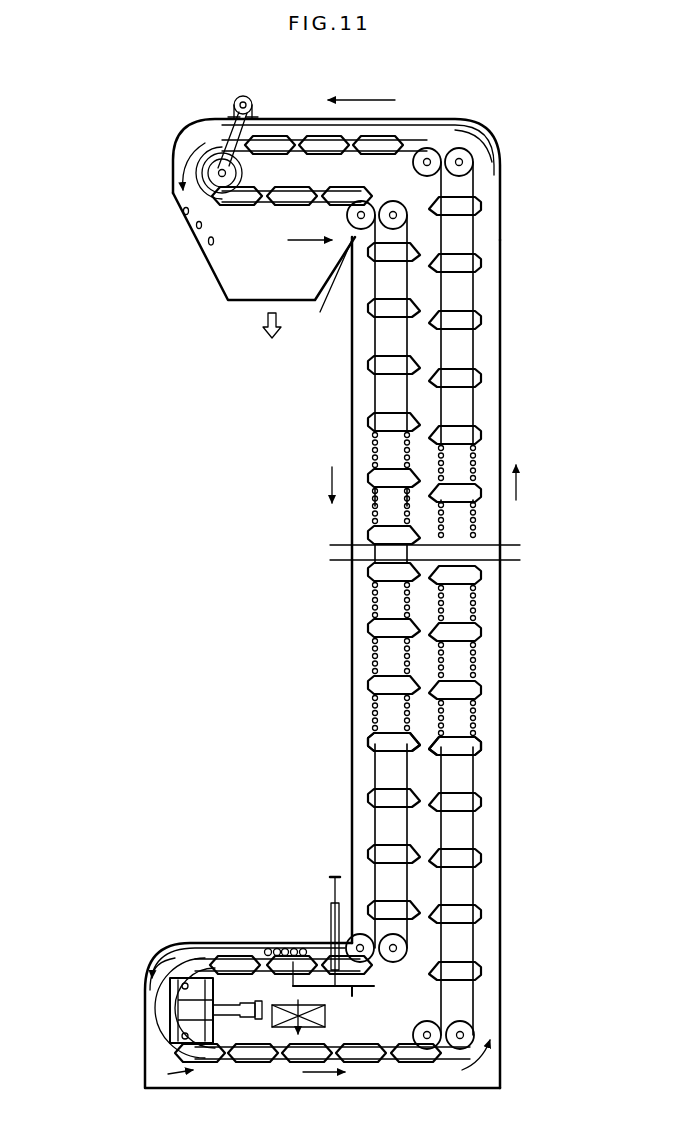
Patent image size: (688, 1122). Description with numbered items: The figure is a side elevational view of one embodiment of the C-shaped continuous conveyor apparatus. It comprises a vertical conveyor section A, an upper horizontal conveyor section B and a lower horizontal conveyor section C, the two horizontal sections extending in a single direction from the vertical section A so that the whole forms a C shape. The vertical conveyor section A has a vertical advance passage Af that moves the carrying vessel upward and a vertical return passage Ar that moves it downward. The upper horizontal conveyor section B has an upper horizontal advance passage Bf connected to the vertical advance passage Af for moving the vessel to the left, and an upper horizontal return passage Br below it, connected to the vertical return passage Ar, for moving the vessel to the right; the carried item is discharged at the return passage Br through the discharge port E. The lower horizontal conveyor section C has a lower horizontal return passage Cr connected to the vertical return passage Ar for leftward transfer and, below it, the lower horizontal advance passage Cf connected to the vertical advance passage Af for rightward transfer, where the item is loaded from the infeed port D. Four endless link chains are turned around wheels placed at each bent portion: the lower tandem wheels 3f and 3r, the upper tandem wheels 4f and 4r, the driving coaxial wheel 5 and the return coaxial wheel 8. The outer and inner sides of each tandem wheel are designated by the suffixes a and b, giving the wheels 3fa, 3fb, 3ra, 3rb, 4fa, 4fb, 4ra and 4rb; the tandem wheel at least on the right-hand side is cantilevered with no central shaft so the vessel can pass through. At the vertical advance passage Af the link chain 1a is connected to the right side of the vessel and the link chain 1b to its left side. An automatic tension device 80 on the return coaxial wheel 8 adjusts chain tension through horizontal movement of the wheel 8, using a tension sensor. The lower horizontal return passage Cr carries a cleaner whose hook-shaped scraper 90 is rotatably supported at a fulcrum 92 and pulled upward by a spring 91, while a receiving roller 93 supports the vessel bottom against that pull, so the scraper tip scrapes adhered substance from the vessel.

The upper horizontal conveyor section B is at (377, 113).
The upper horizontal advance passage Bf is at (288, 135).
The upper horizontal return passage Br is at (268, 216).
The driving coaxial wheel 5 is at (207, 160).
The discharge port E is at (250, 300).
The upper rear tandem wheel 4r is at (330, 288).
The upper front tandem wheel 4f is at (477, 147).
The outer side of upper front tandem wheel 4fa is at (475, 163).
The inner side of upper front tandem wheel 4fb is at (418, 148).
The outer side of upper rear tandem wheel 4ra is at (352, 226).
The inner side of upper rear tandem wheel 4rb is at (408, 215).
The vertical conveyor section A is at (512, 444).
The vertical return passage Ar is at (370, 402).
The vertical advance passage Af is at (490, 402).
The link chain 1a is at (374, 702).
The link chain 1b is at (372, 727).
The lower rear tandem wheel 3r is at (355, 928).
The outer side of lower rear tandem wheel 3ra is at (352, 938).
The inner side of lower rear tandem wheel 3rb is at (386, 933).
The lower horizontal conveyor section C is at (143, 946).
The lower horizontal return passage Cr is at (217, 957).
The lower horizontal advance passage Cf is at (416, 1066).
The return coaxial wheel 8 is at (150, 968).
The automatic tension device 80 is at (172, 1007).
The infeed port D is at (272, 1016).
The scraper 90 is at (352, 996).
The spring 91 is at (326, 944).
The fulcrum 92 is at (373, 987).
The receiving roller 93 is at (280, 940).
The lower front tandem wheel 3f is at (488, 1028).
The outer side of lower front tandem wheel 3fa is at (464, 1027).
The inner side of lower front tandem wheel 3fb is at (425, 1030).